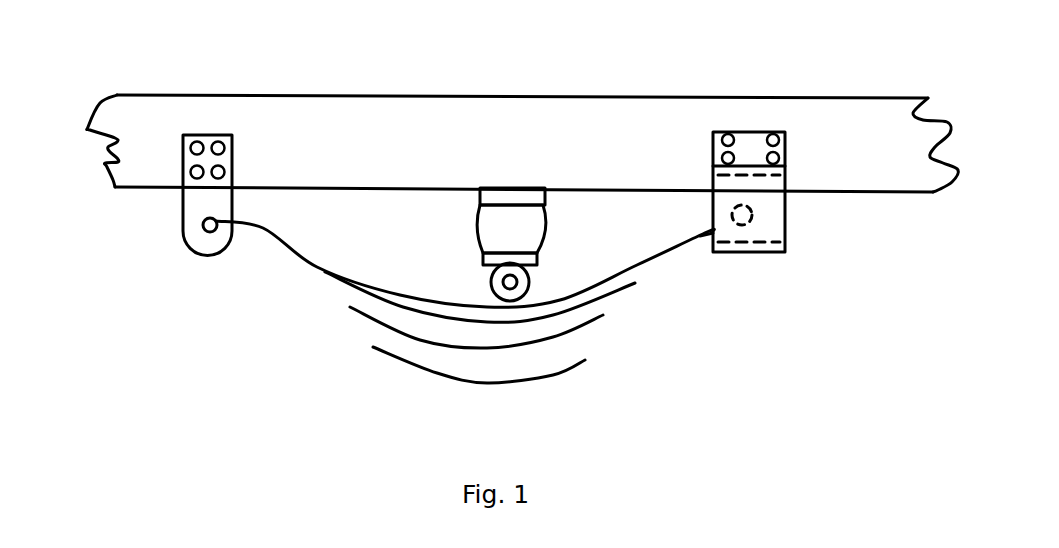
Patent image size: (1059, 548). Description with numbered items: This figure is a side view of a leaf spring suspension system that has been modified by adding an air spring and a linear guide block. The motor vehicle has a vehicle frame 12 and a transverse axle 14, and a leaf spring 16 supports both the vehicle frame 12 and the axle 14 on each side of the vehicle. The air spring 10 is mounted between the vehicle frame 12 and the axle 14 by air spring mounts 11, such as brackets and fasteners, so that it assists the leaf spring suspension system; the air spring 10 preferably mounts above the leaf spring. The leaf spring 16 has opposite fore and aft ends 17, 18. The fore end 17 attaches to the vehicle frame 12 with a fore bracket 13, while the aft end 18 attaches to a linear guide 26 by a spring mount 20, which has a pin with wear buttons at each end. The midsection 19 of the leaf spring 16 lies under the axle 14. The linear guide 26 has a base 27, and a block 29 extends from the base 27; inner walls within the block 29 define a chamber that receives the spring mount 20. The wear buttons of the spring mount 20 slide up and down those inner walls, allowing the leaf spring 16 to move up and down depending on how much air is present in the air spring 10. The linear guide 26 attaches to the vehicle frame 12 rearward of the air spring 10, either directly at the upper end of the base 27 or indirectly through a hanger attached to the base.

The air spring 10 is at (497, 232).
The air spring mounts 11 is at (502, 195).
The vehicle frame 12 is at (328, 127).
The fore bracket 13 is at (200, 202).
The transverse axle 14 is at (530, 280).
The leaf spring 16 is at (350, 288).
The fore end 17 is at (258, 228).
The aft end 18 is at (697, 235).
The midsection 19 is at (510, 325).
The spring mount 20 is at (753, 213).
The linear guide 26 is at (765, 190).
The base 27 is at (750, 143).
The block 29 is at (767, 230).